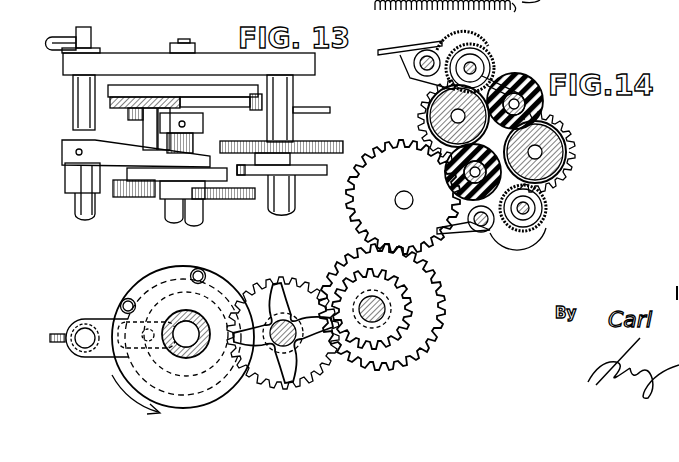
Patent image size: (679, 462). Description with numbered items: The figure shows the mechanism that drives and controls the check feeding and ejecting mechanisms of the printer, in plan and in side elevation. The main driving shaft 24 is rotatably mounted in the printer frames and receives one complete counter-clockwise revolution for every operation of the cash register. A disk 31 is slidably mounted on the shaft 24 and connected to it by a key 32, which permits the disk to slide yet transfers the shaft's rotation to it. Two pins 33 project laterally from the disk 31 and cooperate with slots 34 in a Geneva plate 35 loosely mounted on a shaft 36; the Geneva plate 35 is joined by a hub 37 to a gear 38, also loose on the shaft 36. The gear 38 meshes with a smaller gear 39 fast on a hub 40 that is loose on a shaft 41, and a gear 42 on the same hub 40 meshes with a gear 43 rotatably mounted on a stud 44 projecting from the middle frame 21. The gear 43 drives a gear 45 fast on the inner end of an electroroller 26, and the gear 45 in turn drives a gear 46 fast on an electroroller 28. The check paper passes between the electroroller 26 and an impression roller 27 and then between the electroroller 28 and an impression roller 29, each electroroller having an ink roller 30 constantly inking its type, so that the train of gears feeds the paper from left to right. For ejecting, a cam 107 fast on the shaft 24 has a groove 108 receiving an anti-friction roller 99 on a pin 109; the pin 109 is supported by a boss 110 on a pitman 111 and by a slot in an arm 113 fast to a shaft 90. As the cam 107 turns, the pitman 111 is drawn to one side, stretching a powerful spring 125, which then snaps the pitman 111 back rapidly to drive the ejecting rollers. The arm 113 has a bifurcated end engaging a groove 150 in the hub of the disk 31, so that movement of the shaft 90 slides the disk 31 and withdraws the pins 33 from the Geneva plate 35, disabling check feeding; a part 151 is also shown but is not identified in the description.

In FIG. 13, the frame 21 is at (312, 70).
In FIG. 13, the main driving shaft 24 is at (193, 45).
In FIG. 14, the electroroller 26 is at (440, 100).
In FIG. 14, the impression roller 27 is at (478, 200).
In FIG. 14, the electroroller 28 is at (566, 148).
In FIG. 14, the impression roller 29 is at (522, 86).
In FIG. 14, the ink roller 30 is at (483, 58).
In FIG. 13, the disk 31 is at (248, 203).
In FIG. 13, the key 32 is at (190, 328).
In FIG. 13, the pins 33 is at (128, 197).
In FIG. 13, the slots 34 is at (308, 287).
In FIG. 13, the Geneva plate 35 is at (327, 171).
In FIG. 13, the shaft 36 is at (270, 380).
In FIG. 13, the hub 37 is at (284, 150).
In FIG. 13, the gear 38 is at (326, 146).
In FIG. 13, the gear 39 is at (393, 302).
In FIG. 13, the hub 40 is at (393, 313).
In FIG. 13, the shaft 41 is at (376, 328).
In FIG. 13, the gear 42 is at (412, 356).
In FIG. 13, the gear 43 is at (362, 204).
In FIG. 13, the stud 44 is at (404, 206).
In FIG. 14, the gear 45 is at (418, 116).
In FIG. 14, the gear 46 is at (560, 134).
In FIG. 13, the shaft 90 is at (90, 41).
In FIG. 13, the anti-friction roller 99 is at (152, 112).
In FIG. 13, the cam 107 is at (118, 88).
In FIG. 13, the groove 108 is at (225, 100).
In FIG. 13, the pin 109 is at (148, 138).
In FIG. 13, the boss 110 is at (130, 118).
In FIG. 13, the pitman 111 is at (312, 108).
In FIG. 13, the arm 113 is at (66, 155).
In FIG. 14, the spring 125 is at (458, 6).
In FIG. 13, the groove 150 is at (210, 160).
In FIG. 13, the knob 151 is at (58, 40).